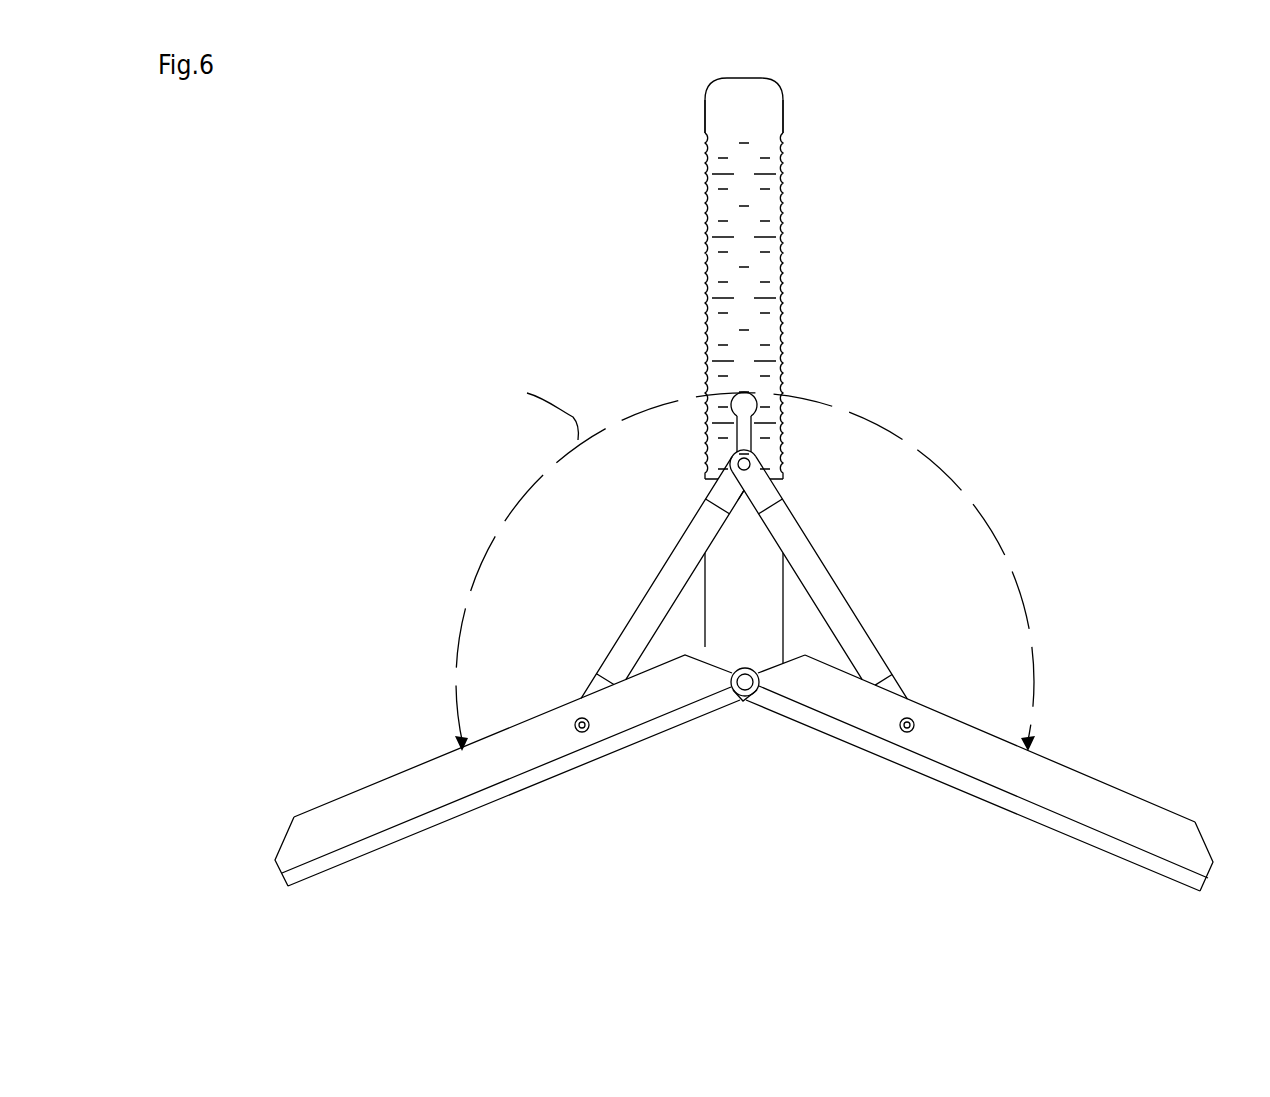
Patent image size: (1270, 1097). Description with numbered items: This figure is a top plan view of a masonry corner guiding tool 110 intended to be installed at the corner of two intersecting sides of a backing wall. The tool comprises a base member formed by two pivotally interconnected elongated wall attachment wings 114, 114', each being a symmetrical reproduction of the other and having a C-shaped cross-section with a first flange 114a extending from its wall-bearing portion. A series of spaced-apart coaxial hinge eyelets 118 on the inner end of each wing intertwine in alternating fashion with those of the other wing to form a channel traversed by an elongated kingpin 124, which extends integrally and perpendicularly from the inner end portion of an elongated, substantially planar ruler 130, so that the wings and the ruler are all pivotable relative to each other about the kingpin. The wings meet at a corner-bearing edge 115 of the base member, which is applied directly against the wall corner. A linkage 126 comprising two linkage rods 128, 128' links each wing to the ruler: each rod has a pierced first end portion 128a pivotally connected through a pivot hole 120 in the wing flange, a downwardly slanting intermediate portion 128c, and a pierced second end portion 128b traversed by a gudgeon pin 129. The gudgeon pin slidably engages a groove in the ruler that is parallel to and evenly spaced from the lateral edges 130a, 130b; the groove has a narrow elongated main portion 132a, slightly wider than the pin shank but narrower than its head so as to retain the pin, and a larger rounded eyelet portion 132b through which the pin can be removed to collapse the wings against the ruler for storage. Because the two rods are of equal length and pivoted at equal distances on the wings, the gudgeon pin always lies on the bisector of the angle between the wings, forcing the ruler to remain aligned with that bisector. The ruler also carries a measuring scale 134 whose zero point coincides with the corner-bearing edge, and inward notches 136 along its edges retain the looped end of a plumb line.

The masonry corner guiding tool 110 is at (1056, 330).
The attachment wing 114 is at (1007, 758).
The attachment wing 114' is at (507, 770).
The first flange 114a is at (1160, 822).
The corner-bearing edge 115 is at (745, 702).
The hinge eyelets 118 is at (738, 668).
The pivot hole 120 is at (910, 722).
The kingpin 124 is at (750, 668).
The linkage 126 is at (702, 536).
The linkage rod 128 is at (850, 608).
The linkage rod 128' is at (662, 592).
The first end portion 128a is at (903, 693).
The second end portion 128b is at (757, 484).
The intermediate portion 128c is at (780, 517).
The gudgeon pin 129 is at (746, 464).
The ruler 130 is at (771, 103).
The lateral edge 130a is at (786, 128).
The lateral edge 130b is at (707, 118).
The groove main portion 132a is at (742, 408).
The eyelet portion 132b is at (708, 427).
The measuring scale 134 is at (768, 210).
The notches 136 is at (706, 250).